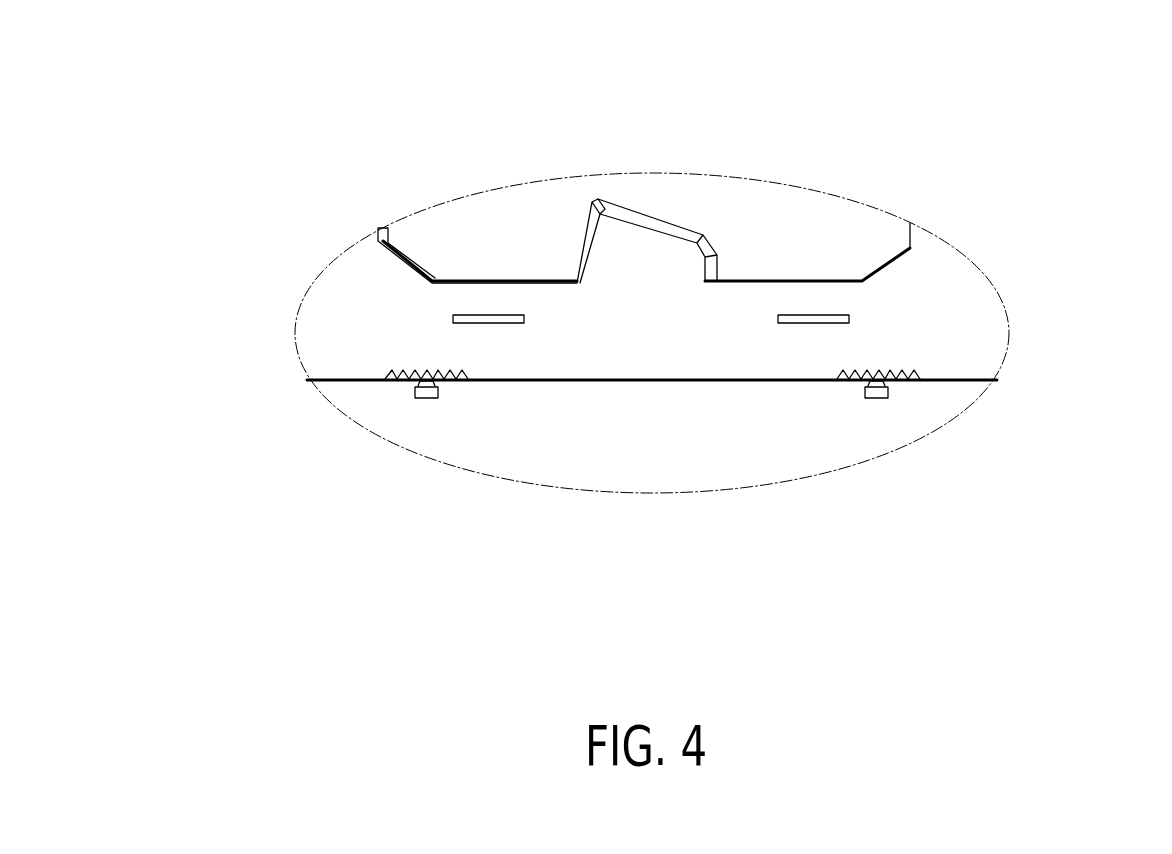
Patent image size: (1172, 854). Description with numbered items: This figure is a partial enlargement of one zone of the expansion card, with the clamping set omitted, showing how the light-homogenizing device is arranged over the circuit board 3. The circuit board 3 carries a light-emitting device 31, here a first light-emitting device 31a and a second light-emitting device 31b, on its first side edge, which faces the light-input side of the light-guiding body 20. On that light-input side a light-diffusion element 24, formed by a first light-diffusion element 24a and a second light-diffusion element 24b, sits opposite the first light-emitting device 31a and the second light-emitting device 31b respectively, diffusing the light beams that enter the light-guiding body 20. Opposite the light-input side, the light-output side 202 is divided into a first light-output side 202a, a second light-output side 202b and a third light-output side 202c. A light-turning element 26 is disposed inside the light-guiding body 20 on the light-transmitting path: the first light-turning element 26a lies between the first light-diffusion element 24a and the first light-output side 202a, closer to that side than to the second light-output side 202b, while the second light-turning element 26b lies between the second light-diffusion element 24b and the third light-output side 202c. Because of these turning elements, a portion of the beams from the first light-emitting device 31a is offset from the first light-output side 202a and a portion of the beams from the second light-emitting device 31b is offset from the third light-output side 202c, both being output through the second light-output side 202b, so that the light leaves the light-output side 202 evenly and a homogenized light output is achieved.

The circuit board 3 is at (937, 403).
The light-guiding body 20 is at (955, 273).
The light-diffusion element 24 is at (770, 344).
The first light-diffusion element 24a is at (465, 375).
The second light-diffusion element 24b is at (917, 373).
The light-turning element 26 is at (505, 326).
The first light-turning element 26a is at (453, 319).
The second light-turning element 26b is at (783, 317).
The light-emitting device 31 is at (651, 504).
The first light-emitting device 31a is at (427, 398).
The second light-emitting device 31b is at (851, 468).
The light-output side 202 is at (644, 158).
The first light-output side 202a is at (510, 280).
The second light-output side 202b is at (663, 215).
The third light-output side 202c is at (807, 199).